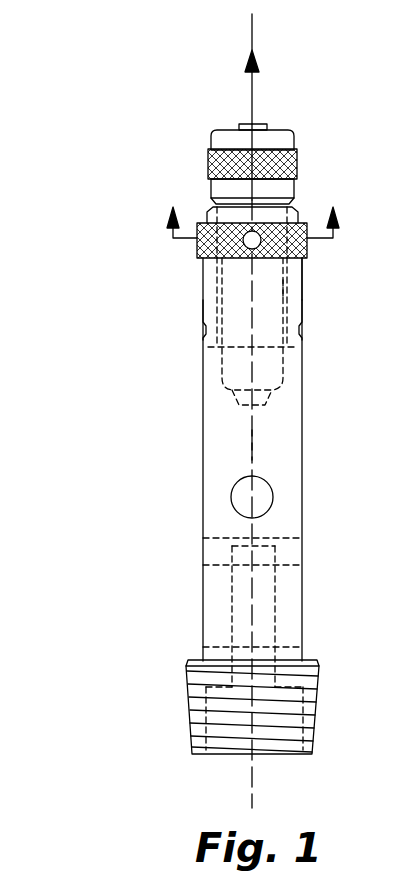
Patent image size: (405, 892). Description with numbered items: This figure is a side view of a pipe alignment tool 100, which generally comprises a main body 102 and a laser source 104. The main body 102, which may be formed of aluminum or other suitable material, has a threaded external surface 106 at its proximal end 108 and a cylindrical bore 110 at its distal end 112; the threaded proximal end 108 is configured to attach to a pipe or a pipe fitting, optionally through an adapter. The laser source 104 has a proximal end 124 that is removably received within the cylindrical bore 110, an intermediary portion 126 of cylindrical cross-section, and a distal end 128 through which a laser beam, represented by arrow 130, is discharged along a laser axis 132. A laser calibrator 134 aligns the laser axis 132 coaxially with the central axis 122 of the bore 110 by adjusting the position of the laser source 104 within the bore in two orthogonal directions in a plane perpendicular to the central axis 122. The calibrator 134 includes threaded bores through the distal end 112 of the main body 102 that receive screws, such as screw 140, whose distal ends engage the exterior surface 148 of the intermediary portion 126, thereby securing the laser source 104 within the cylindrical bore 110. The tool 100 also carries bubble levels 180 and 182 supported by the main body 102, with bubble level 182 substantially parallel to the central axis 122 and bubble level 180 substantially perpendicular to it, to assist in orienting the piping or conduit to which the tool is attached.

The pipe alignment tool 100 is at (88, 103).
The main body 102 is at (292, 432).
The laser source 104 is at (243, 164).
The threaded external surface 106 is at (251, 707).
The proximal end 108 is at (192, 678).
The cylindrical bore 110 is at (288, 312).
The distal end 112 is at (290, 268).
The central axis 122 is at (252, 443).
The proximal end 124 is at (220, 371).
The intermediary portion 126 is at (277, 291).
The distal end 128 is at (211, 143).
The laser beam 130 is at (252, 92).
The laser axis 132 is at (252, 30).
The laser calibrator 134 is at (193, 256).
The screw 140 is at (245, 252).
The exterior surface 148 is at (192, 307).
The bubble level 180 is at (262, 498).
The bubble level 182 is at (265, 612).